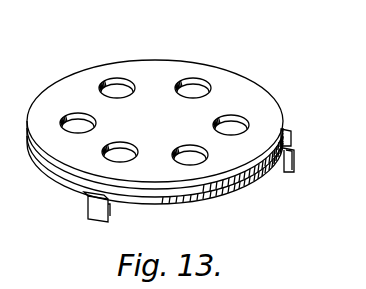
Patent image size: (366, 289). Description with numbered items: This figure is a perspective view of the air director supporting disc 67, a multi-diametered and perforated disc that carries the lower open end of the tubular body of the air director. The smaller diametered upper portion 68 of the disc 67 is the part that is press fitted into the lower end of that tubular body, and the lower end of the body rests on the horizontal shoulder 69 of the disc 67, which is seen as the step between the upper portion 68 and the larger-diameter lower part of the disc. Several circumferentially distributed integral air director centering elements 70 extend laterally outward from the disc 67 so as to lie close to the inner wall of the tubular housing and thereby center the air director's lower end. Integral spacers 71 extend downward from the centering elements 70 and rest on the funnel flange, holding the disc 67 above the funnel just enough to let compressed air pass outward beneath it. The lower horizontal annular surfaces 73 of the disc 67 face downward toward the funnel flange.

The air director supporting disc 67 is at (200, 49).
The smaller diametered upper portion 68 is at (70, 170).
The horizontal shoulder 69 is at (228, 190).
The air director centering elements 70 is at (85, 206).
The spacers 71 is at (110, 210).
The lower horizontal annular surfaces 73 is at (176, 208).